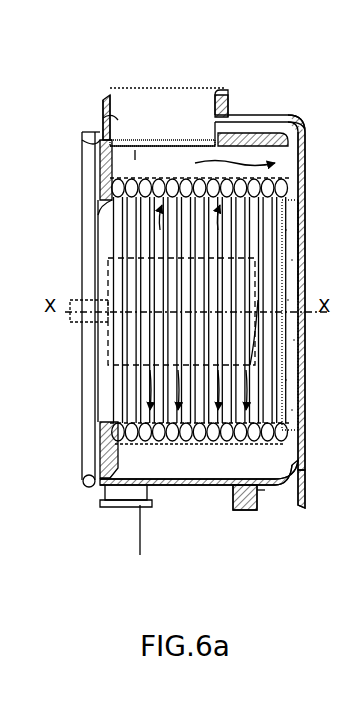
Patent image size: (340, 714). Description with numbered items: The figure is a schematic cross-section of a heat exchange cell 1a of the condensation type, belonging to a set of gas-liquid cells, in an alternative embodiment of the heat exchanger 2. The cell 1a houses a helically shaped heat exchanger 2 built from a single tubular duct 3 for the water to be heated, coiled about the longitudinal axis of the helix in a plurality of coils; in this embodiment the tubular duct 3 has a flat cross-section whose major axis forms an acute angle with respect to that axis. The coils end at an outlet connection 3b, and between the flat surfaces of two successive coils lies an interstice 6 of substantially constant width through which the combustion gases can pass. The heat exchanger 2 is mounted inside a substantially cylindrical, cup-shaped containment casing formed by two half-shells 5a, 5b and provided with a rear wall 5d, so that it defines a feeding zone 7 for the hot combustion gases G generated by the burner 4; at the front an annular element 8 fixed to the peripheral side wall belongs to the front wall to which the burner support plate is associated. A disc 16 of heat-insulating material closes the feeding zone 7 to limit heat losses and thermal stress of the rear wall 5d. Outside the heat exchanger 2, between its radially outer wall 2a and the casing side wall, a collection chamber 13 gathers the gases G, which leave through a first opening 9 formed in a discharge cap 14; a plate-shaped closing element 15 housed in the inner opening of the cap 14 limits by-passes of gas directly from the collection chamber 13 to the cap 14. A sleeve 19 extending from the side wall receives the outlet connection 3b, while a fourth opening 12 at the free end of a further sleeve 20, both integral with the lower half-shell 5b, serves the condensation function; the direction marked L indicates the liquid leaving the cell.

The heat exchange cell 1a is at (78, 96).
The helically shaped heat exchanger 2 is at (137, 168).
The radially outer wall 2a is at (116, 132).
The tubular duct 3 is at (100, 196).
The outlet connection 3b is at (127, 533).
The burner 4 is at (106, 336).
The half-shell 5a is at (300, 128).
The lower half-shell 5b is at (300, 462).
The rear wall 5d is at (305, 255).
The interstice 6 is at (150, 445).
The feeding zone 7 is at (120, 235).
The annular element 8 is at (85, 392).
The first opening 9 is at (162, 85).
The fourth opening 12 is at (240, 512).
The collection chamber 13 is at (222, 472).
The discharge cap 14 is at (250, 112).
The closing element 15 is at (200, 140).
The disc 16 is at (300, 392).
The sleeve 19 is at (100, 495).
The sleeve 20 is at (258, 497).
The flow of hot combustion gases G is at (187, 80).
The liquid flow L is at (123, 512).